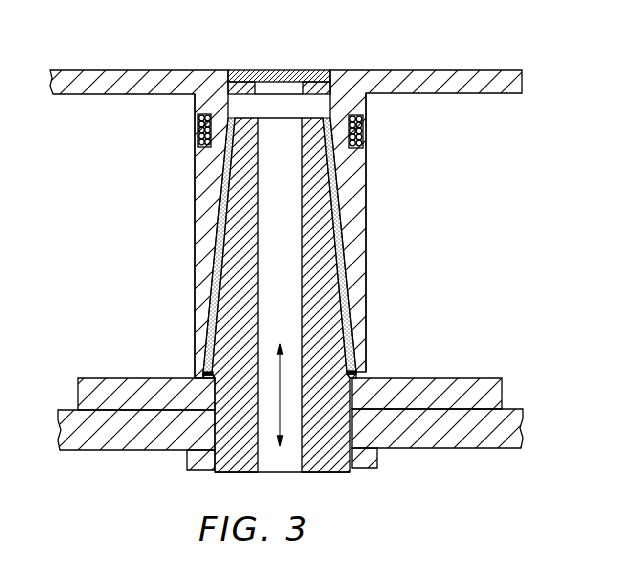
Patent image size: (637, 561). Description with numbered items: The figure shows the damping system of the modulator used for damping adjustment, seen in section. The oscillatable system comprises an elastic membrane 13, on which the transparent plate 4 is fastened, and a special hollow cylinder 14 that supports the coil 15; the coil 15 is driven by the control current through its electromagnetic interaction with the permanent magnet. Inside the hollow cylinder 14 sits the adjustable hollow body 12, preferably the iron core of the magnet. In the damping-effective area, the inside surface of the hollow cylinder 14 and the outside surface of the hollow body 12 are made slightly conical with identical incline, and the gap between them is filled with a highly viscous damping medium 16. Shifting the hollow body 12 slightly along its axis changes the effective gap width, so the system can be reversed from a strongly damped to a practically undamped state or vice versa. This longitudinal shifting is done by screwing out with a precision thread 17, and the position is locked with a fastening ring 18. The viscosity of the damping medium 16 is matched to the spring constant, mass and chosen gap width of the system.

The plate 4 is at (273, 70).
The hollow body 12 is at (237, 268).
The elastic membrane 13 is at (193, 71).
The special hollow cylinder 14 is at (206, 172).
The coil 15 is at (198, 132).
The highly viscous damping medium 16 is at (228, 209).
The precision thread 17 is at (207, 375).
The fastening ring 18 is at (190, 461).